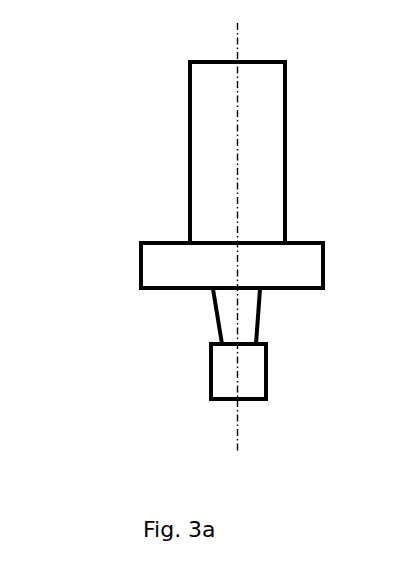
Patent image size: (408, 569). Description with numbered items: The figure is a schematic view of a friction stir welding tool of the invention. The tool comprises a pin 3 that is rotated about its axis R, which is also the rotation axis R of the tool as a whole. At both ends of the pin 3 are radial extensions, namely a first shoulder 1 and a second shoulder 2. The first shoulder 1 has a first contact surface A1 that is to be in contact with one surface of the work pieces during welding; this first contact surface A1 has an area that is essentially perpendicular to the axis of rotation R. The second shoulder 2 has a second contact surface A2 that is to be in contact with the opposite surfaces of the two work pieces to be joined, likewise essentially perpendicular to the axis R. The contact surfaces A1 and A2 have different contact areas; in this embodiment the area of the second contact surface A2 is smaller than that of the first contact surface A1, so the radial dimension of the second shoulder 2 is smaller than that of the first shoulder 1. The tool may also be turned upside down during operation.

The axis of rotation R is at (238, 47).
The first shoulder 1 is at (141, 260).
The pin 3 is at (215, 312).
The second shoulder 2 is at (212, 382).
The first contact surface A1 is at (273, 290).
The second contact surface A2 is at (262, 346).